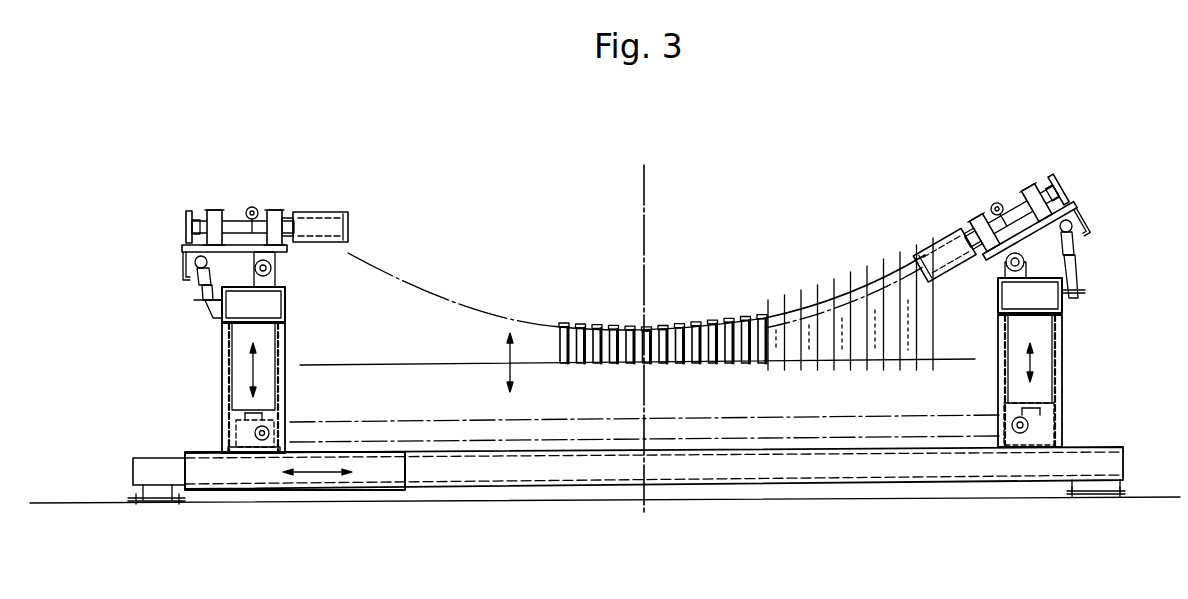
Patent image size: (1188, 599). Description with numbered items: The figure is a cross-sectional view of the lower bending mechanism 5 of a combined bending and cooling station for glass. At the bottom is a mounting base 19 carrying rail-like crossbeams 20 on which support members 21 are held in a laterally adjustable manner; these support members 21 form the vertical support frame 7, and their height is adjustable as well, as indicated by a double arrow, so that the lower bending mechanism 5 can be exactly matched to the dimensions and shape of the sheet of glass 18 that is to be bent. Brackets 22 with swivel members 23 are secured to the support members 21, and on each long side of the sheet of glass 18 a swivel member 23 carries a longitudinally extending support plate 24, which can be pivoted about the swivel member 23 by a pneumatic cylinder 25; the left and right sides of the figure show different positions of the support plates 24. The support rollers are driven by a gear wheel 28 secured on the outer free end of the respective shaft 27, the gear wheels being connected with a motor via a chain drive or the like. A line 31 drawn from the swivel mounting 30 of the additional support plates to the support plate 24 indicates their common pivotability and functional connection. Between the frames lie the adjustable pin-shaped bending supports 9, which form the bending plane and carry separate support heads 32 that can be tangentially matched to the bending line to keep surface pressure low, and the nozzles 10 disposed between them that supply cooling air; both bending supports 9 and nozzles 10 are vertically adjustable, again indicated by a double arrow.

The lower bending mechanism 5 is at (636, 284).
The vertical support frame 7 is at (200, 399).
The bending supports 9 is at (575, 331).
The nozzles 10 is at (611, 331).
The sheet of glass 18 is at (823, 295).
The mounting base 19 is at (160, 513).
The crossbeams 20 is at (504, 478).
The support members 21 is at (222, 364).
The brackets 22 is at (224, 317).
The swivel members 23 is at (277, 270).
The support plate 24 is at (186, 249).
The pneumatic cylinder 25 is at (198, 292).
The shaft 27 is at (232, 230).
The gear wheel 28 is at (188, 218).
The swivel mounting 30 is at (258, 212).
The line 31 is at (234, 258).
The support head 32 is at (561, 330).